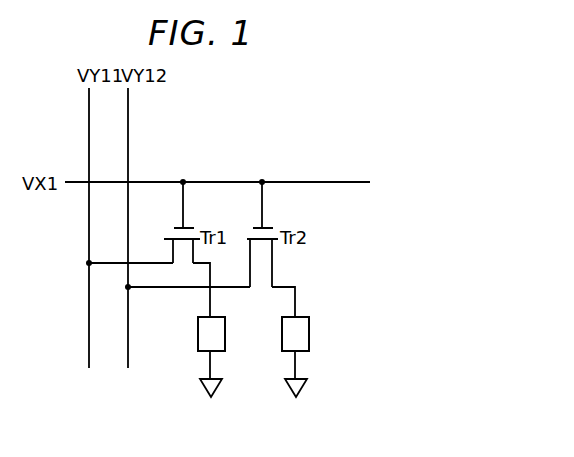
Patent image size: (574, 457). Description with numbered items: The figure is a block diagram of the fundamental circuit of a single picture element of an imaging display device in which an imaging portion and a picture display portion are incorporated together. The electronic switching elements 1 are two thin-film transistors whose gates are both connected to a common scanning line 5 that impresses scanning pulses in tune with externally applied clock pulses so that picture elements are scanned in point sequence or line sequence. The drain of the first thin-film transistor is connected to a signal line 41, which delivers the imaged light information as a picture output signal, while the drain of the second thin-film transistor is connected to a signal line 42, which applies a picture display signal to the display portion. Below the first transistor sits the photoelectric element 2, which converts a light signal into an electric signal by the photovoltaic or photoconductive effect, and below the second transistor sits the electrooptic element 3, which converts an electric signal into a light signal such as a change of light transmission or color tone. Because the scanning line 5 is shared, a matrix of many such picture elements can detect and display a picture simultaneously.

The electronic switching elements 1 is at (168, 229).
The photoelectric element 2 is at (225, 334).
The electrooptic element 3 is at (309, 333).
The scanning line 5 is at (327, 182).
The signal line 41 is at (89, 243).
The signal line 42 is at (129, 243).